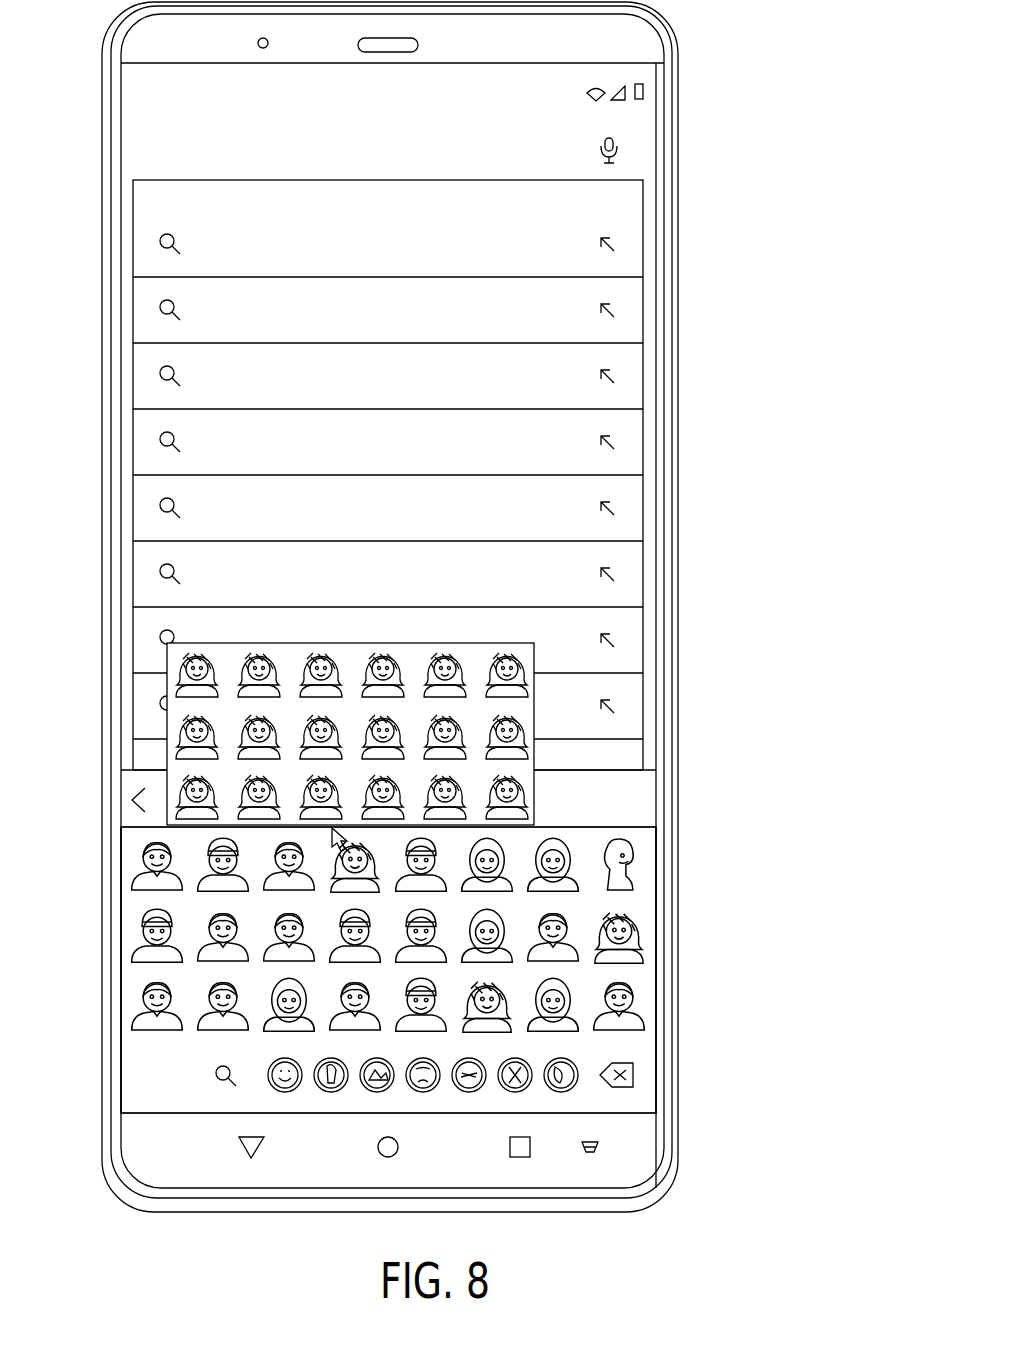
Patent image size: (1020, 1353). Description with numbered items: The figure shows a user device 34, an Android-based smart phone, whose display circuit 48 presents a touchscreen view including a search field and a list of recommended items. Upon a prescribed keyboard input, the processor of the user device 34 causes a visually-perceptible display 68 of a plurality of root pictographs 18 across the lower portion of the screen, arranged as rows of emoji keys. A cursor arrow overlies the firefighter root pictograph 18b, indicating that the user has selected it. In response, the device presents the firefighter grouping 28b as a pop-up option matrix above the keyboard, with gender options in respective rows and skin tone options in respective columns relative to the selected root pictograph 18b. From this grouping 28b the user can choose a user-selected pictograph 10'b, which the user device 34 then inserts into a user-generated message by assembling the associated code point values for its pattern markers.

The user device 34 is at (745, 43).
The display circuit 48 is at (645, 167).
The firefighter grouping 28b is at (167, 667).
The user-selected pictograph 10'b is at (451, 687).
The firefighter root pictograph 18b is at (353, 892).
The visually-perceptible display 68 is at (449, 970).
The root pictographs 18 is at (688, 1112).